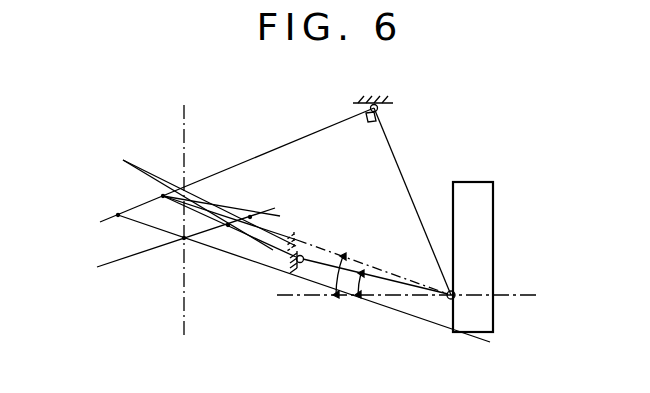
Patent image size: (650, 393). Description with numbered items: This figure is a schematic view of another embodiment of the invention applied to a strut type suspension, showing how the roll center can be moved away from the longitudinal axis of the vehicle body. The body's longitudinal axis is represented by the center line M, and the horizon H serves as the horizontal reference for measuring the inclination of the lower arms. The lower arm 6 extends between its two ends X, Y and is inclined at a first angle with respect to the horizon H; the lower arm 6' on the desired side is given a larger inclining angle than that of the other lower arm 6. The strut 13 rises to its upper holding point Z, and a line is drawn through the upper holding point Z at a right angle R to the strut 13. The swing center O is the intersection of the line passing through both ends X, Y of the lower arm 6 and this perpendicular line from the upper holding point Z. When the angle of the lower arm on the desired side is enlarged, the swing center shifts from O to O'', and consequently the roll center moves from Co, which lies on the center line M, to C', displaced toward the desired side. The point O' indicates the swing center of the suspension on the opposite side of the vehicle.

The center line M is at (184, 207).
The horizon H is at (518, 293).
The upper holding point Z is at (380, 112).
The right angle R is at (368, 122).
The strut 13 is at (407, 185).
The end of the lower arm Y is at (450, 290).
The end of the lower arm X is at (300, 265).
The lower arm 6 is at (375, 252).
The lower arm 6' is at (367, 252).
The swing center O is at (288, 225).
The swing center O' is at (197, 221).
The swing center O'' is at (216, 192).
The roll center Co is at (182, 242).
The roll center C' is at (209, 205).